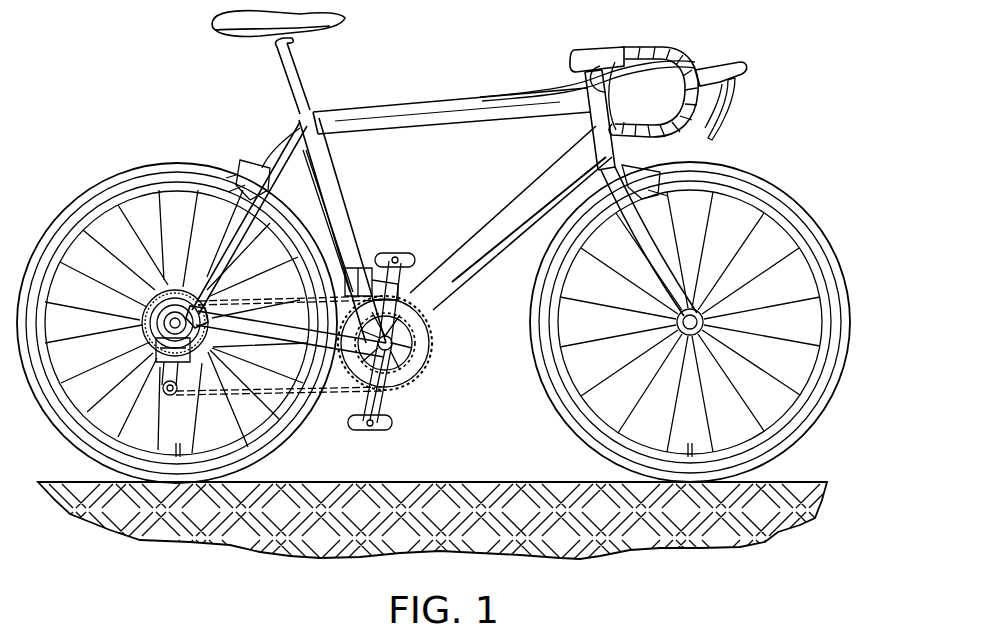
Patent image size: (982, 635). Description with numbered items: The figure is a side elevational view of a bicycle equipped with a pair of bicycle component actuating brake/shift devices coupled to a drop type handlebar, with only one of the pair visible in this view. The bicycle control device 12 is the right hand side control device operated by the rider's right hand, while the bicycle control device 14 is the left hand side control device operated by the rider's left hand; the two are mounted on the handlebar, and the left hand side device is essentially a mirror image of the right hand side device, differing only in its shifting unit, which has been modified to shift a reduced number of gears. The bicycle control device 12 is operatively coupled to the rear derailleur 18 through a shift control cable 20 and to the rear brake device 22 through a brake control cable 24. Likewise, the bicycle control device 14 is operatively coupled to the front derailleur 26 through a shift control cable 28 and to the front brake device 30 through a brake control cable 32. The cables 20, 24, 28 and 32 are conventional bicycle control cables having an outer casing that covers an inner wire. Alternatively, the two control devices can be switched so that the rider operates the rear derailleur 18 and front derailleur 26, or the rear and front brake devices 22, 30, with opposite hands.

The bicycle control device 12 is at (787, 92).
The bicycle control device 14 is at (750, 68).
The rear derailleur 18 is at (173, 397).
The shift control cable 20 is at (112, 353).
The rear brake device 22 is at (250, 172).
The brake control cable 24 is at (283, 128).
The front derailleur 26 is at (378, 285).
The shift control cable 28 is at (327, 201).
The front brake device 30 is at (692, 149).
The brake control cable 32 is at (617, 101).